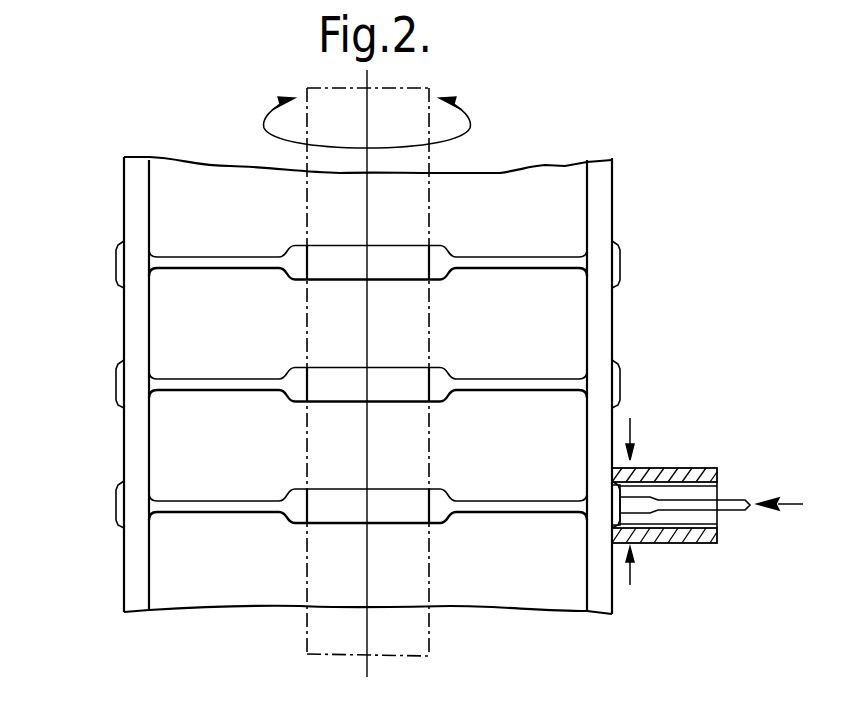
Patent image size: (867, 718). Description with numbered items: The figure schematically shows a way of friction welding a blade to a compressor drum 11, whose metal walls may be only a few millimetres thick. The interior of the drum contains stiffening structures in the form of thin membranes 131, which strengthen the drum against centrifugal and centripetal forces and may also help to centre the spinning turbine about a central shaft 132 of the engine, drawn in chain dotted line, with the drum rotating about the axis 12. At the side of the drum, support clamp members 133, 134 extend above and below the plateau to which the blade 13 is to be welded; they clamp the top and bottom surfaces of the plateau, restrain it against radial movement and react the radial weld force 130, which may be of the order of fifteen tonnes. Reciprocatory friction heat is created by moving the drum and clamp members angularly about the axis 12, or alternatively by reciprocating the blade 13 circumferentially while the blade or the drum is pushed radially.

The reactor vessel 11 is at (115, 312).
The axis 12 is at (367, 623).
The blade 13 is at (736, 513).
The radial weld force 130 is at (797, 488).
The membrane 131 is at (223, 513).
The central shaft 132 is at (433, 620).
The support clamp member 133 is at (675, 467).
The support clamp member 134 is at (668, 544).